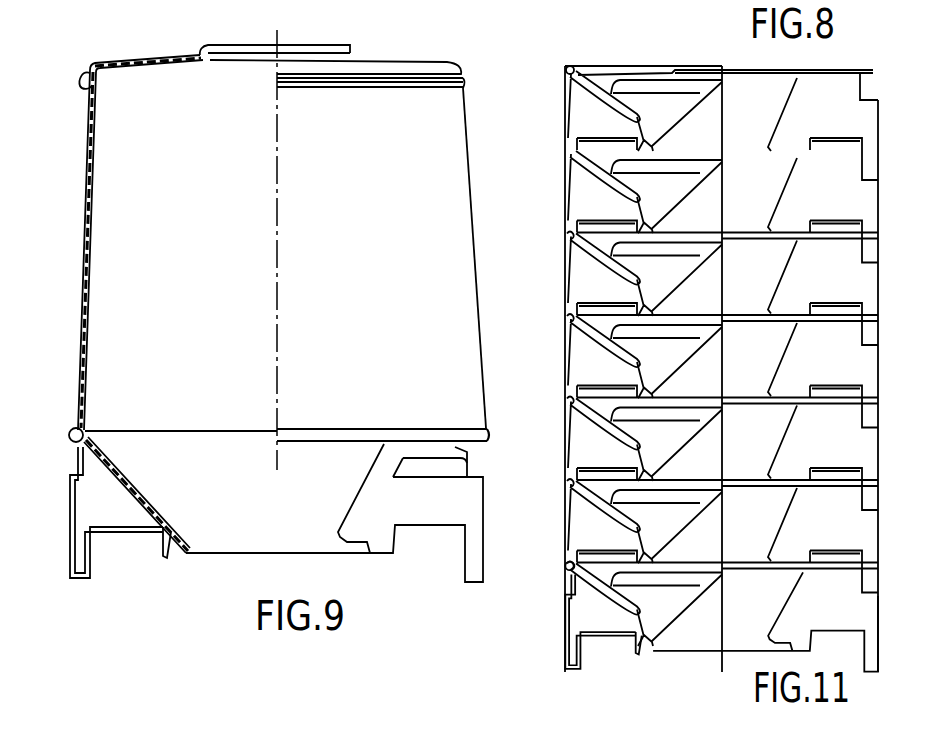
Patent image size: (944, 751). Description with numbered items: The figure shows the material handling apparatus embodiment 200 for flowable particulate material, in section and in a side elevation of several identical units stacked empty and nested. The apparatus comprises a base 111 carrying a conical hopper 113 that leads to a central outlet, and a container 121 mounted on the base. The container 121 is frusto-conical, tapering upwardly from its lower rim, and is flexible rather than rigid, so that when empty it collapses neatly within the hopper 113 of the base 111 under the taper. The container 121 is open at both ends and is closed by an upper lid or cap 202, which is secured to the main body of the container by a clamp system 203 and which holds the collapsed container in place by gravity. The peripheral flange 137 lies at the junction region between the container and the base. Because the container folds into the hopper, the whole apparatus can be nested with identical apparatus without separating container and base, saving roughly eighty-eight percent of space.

In FIG. 9, the embodiment 200 is at (304, 297).
In FIG. 9, the container 121 is at (388, 237).
In FIG. 11, the container 121 is at (572, 287).
In FIG. 9, the lid 202 is at (470, 47).
In FIG. 9, the clamp system 203 is at (463, 82).
In FIG. 9, the peripheral flange 137 is at (490, 442).
In FIG. 9, the hopper 113 is at (145, 497).
In FIG. 9, the base 111 is at (494, 512).
In FIG. 11, the base 111 is at (563, 630).